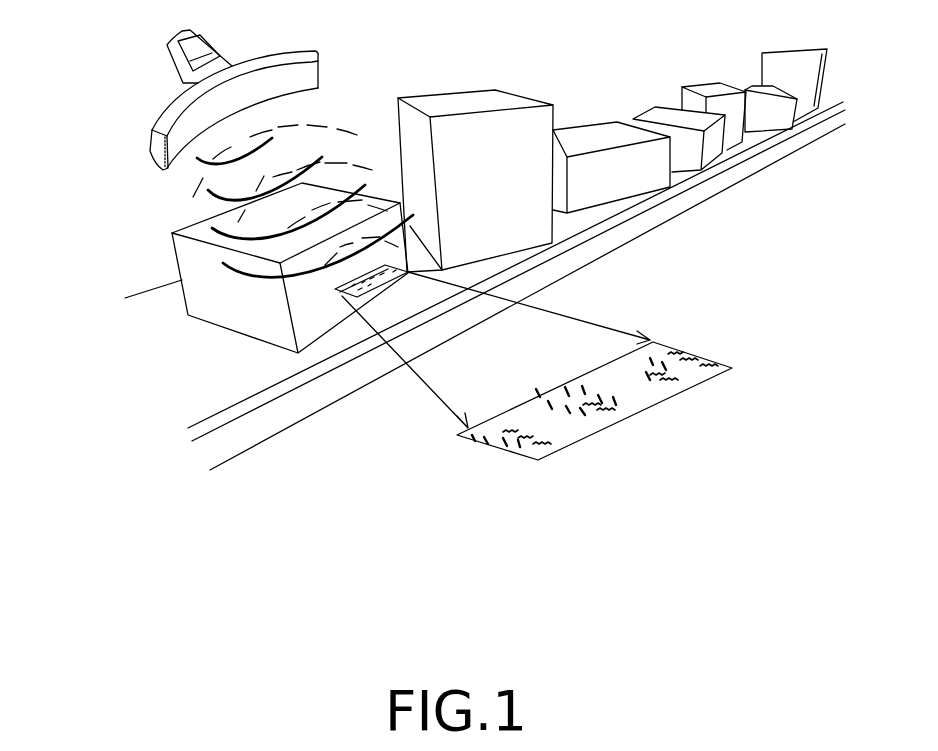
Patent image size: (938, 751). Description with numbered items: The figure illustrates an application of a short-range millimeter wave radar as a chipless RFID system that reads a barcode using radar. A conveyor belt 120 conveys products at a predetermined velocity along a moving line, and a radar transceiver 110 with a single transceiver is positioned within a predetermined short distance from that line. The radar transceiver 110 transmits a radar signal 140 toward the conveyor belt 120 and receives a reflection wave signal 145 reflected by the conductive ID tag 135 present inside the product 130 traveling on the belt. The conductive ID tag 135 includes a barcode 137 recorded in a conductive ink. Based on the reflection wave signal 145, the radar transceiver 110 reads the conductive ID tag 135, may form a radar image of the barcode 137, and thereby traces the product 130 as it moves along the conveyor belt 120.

The radar transceiver 110 is at (173, 108).
The conveyor belt 120 is at (683, 198).
The product 130 is at (184, 257).
The conductive ID tag 135 is at (337, 293).
The barcode 137 is at (622, 405).
The radar signal 140 is at (206, 192).
The reflection wave signal 145 is at (338, 128).